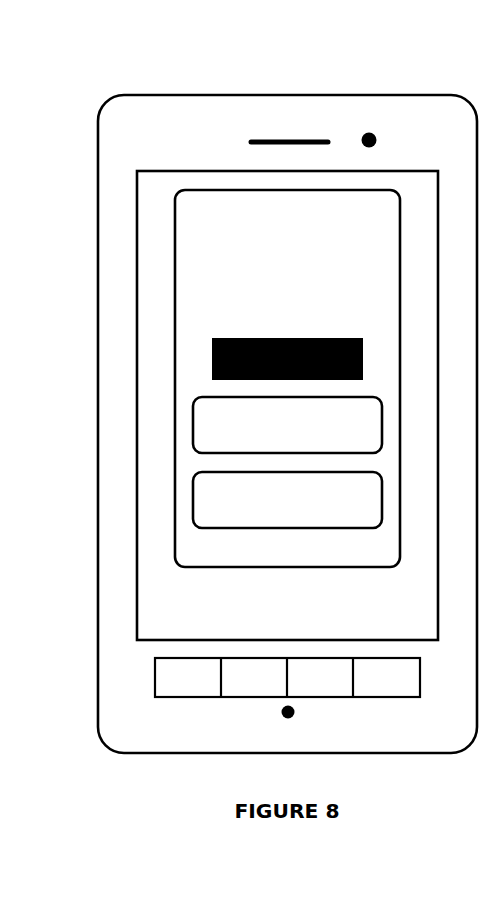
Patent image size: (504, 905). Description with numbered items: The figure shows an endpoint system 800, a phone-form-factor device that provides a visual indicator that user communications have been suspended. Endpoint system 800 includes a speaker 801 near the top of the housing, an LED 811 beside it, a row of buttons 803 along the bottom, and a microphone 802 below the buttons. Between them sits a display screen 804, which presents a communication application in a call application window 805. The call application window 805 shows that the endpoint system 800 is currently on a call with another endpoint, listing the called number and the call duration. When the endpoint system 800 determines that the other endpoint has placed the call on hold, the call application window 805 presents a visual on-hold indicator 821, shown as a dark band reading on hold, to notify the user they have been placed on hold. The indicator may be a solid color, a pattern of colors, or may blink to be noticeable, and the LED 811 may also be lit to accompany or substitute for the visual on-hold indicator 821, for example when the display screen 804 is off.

The endpoint system 800 is at (80, 60).
The speaker 801 is at (251, 141).
The microphone 802 is at (283, 715).
The buttons 803 is at (184, 698).
The display screen 804 is at (182, 170).
The call application window 805 is at (221, 567).
The LED 811 is at (365, 134).
The visual on-hold indicator 821 is at (240, 338).